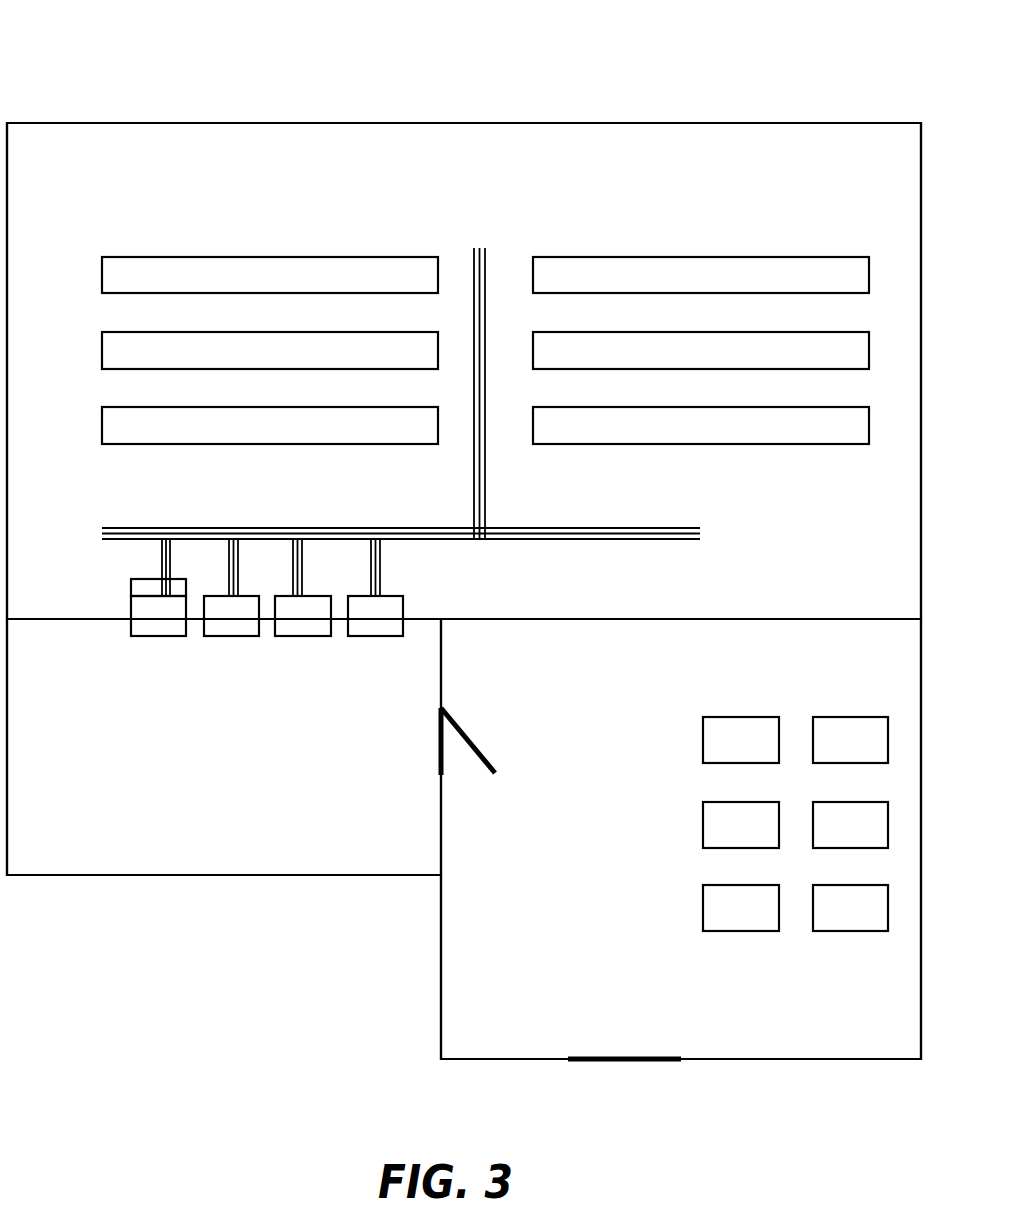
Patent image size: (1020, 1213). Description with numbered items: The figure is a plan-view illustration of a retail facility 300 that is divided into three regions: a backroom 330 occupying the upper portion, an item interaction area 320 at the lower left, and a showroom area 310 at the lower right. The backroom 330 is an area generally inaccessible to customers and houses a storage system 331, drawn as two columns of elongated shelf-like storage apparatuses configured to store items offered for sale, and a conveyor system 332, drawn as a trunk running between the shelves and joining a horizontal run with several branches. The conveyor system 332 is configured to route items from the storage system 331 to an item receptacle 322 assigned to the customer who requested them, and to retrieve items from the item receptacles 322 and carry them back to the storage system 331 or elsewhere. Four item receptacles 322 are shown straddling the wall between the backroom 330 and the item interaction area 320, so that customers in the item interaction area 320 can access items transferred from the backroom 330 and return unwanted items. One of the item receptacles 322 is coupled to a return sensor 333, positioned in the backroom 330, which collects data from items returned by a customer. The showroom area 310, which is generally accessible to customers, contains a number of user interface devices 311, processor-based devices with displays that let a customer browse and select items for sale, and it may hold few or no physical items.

The retail facility 300 is at (593, 103).
The backroom 330 is at (108, 199).
The storage system 331 is at (700, 242).
The conveyor system 332 is at (689, 508).
The return sensor 333 is at (130, 590).
The item receptacle 322 is at (131, 636).
The item interaction area 320 is at (170, 845).
The showroom area 310 is at (812, 1036).
The user interface device 311 is at (685, 748).